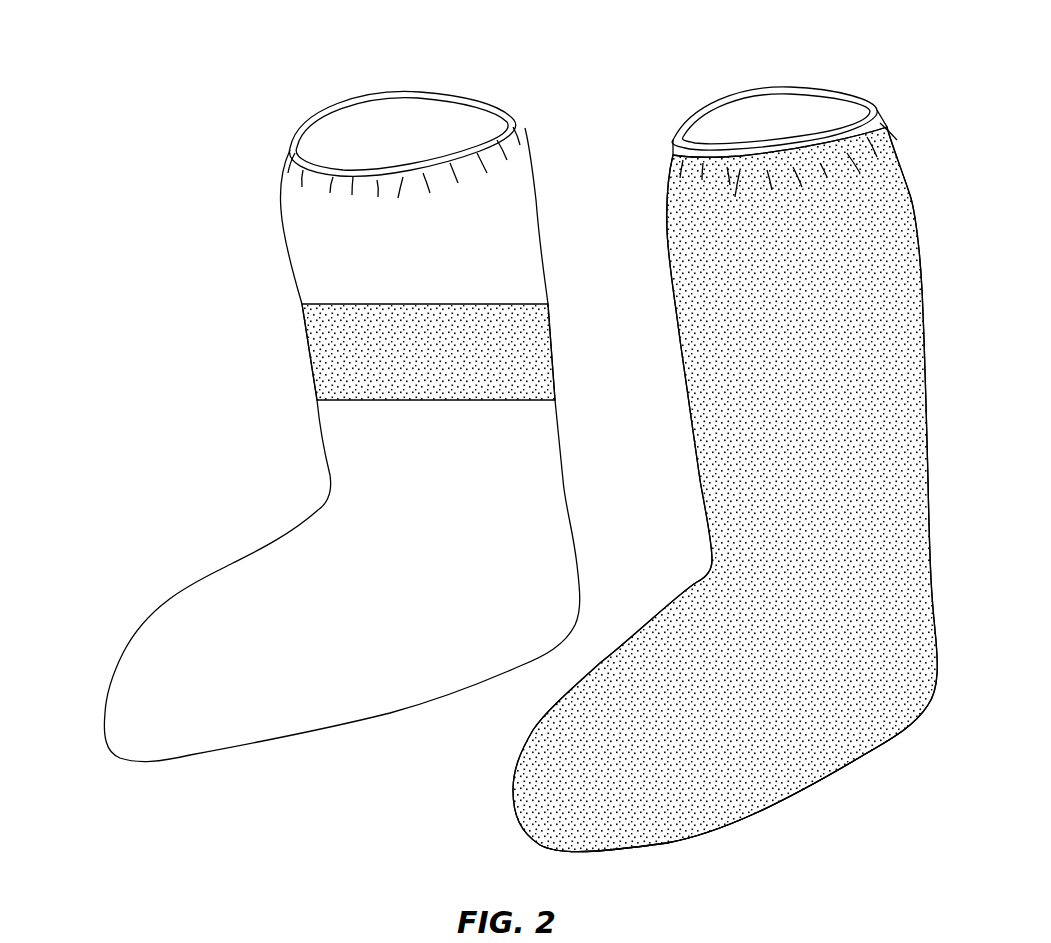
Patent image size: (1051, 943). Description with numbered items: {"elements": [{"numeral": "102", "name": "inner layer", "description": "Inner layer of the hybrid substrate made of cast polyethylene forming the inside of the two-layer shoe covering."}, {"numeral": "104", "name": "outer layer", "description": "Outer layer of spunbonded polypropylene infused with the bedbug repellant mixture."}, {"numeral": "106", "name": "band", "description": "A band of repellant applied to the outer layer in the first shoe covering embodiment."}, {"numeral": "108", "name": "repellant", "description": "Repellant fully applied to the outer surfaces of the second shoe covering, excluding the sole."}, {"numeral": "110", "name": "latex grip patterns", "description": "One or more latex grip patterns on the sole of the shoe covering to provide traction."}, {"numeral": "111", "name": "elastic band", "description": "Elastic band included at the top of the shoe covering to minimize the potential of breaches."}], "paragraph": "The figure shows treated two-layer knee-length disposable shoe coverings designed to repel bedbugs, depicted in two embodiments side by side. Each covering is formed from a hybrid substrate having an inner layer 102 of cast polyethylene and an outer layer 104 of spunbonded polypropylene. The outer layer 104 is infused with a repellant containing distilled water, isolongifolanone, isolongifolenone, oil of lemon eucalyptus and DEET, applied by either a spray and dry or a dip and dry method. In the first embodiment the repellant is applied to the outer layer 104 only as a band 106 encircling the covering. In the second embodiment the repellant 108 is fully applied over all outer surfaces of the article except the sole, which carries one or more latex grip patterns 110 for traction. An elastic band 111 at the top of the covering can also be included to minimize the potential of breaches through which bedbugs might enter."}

The opening 102 is at (363, 140).
The boot cover body 104 is at (305, 228).
The band 106 is at (335, 352).
The outer cover material 108 is at (733, 490).
The sole portion 110 is at (670, 837).
The elastic cuff 111 is at (903, 147).